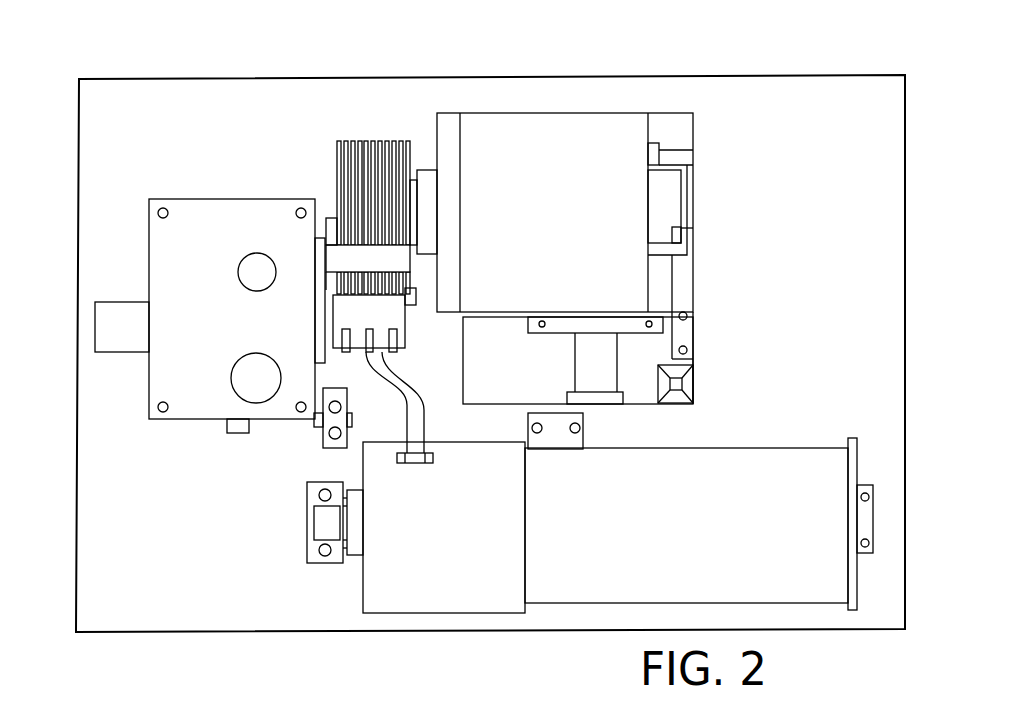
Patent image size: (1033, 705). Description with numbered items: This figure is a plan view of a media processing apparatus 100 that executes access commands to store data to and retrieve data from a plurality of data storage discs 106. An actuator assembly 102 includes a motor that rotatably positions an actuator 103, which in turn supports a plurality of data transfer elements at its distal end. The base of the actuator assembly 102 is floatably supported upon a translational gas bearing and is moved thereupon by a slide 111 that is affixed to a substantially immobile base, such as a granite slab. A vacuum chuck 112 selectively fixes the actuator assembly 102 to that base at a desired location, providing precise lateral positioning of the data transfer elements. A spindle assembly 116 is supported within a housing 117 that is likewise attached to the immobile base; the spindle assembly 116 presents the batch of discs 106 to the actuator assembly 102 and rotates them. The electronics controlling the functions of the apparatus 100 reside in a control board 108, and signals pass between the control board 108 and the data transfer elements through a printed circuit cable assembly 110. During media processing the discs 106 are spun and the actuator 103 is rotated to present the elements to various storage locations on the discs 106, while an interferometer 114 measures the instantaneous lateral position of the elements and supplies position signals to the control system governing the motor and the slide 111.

The media processing apparatus 100 is at (269, 47).
The actuator assembly 102 is at (130, 197).
The actuator 103 is at (405, 330).
The data storage discs 106 is at (337, 152).
The control board 108 is at (473, 603).
The printed circuit cable assembly 110 is at (432, 410).
The slide 111 is at (238, 433).
The vacuum chuck 112 is at (95, 332).
The interferometer 114 is at (323, 442).
The spindle assembly 116 is at (422, 97).
The housing 117 is at (585, 173).